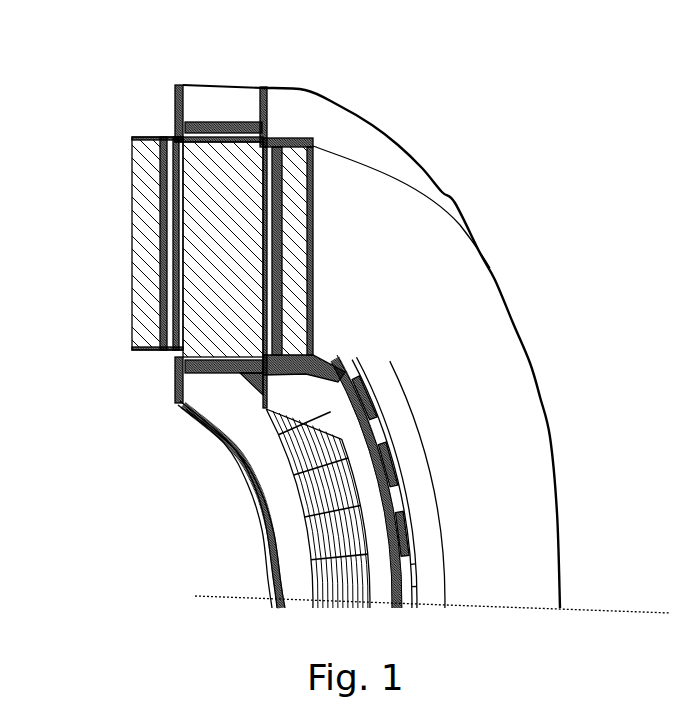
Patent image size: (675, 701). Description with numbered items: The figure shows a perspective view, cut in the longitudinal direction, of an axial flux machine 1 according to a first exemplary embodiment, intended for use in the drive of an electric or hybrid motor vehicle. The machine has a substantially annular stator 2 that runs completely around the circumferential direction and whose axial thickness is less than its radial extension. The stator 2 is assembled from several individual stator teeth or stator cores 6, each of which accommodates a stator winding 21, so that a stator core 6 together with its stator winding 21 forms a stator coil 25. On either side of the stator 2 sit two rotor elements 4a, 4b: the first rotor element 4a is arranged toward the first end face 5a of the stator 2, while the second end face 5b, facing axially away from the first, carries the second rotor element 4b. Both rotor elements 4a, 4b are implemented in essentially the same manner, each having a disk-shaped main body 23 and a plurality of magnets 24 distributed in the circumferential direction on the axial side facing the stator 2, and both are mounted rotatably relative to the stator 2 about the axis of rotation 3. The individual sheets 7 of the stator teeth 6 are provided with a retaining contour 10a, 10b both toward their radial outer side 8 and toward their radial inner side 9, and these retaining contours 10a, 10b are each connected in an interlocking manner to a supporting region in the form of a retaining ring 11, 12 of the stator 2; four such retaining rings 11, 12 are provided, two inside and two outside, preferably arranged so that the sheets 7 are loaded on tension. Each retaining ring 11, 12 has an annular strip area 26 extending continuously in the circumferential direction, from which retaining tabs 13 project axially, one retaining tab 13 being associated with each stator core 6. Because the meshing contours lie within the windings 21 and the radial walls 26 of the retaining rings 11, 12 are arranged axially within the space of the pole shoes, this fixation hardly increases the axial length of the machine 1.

The axial flux machine 1 is at (503, 97).
The stator 2 is at (272, 76).
The axis of rotation 3 is at (197, 598).
The first rotor element 4a is at (147, 197).
The second rotor element 4b is at (340, 117).
The first end face 5a is at (163, 240).
The second end face 5b is at (300, 262).
The stator core 6 is at (184, 350).
The first sheet metal segment 7 is at (223, 249).
The radial outer side 8 is at (180, 84).
The radial inner side 9 is at (189, 386).
The retaining contour 10a is at (200, 110).
The retaining contour 10b is at (237, 388).
The first retaining ring 11 is at (175, 128).
The retaining ring 12 is at (205, 368).
The retaining tab 13 is at (176, 140).
The stator winding 21 is at (232, 122).
The disk-shaped main body 23 is at (134, 303).
The magnet 24 is at (176, 285).
The stator coil 25 is at (237, 413).
The strip area 26 is at (176, 110).